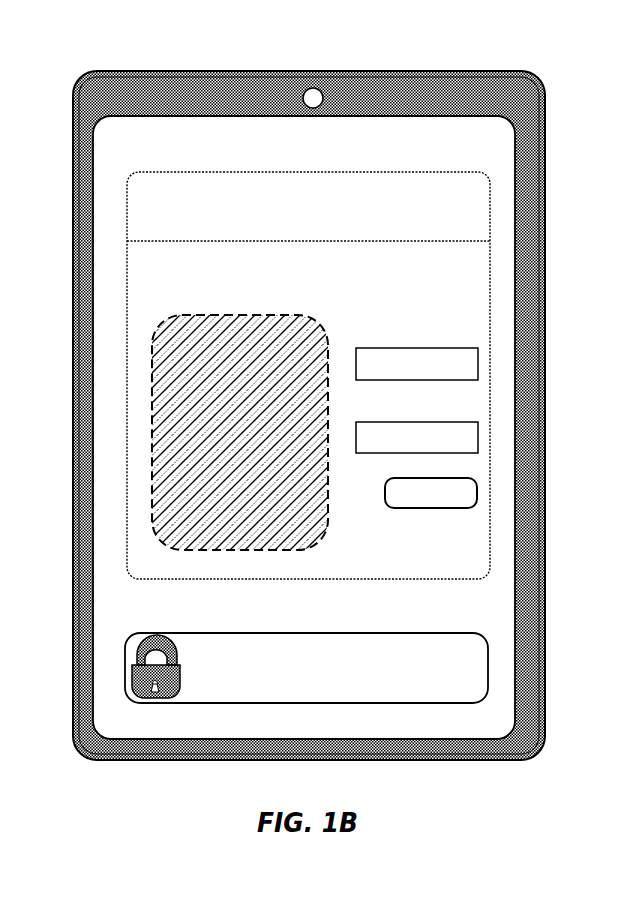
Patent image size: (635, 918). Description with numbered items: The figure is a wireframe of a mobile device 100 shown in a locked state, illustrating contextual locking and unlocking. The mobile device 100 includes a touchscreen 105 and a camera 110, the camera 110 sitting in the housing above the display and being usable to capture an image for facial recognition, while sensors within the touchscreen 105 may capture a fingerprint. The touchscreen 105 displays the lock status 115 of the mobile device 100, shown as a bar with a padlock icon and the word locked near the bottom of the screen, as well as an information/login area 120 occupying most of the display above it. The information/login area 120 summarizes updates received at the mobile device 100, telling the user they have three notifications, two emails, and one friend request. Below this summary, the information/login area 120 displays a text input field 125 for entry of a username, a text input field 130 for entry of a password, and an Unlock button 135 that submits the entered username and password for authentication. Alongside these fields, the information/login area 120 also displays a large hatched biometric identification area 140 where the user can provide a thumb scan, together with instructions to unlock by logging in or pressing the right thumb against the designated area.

The mobile device 100 is at (336, 400).
The touchscreen 105 is at (173, 115).
The camera 110 is at (322, 72).
The lock status 115 is at (363, 633).
The information/login area 120 is at (363, 353).
The text input field 125 is at (478, 352).
The text input field 130 is at (478, 427).
The Unlock button 135 is at (477, 483).
The biometric identification area 140 is at (302, 544).